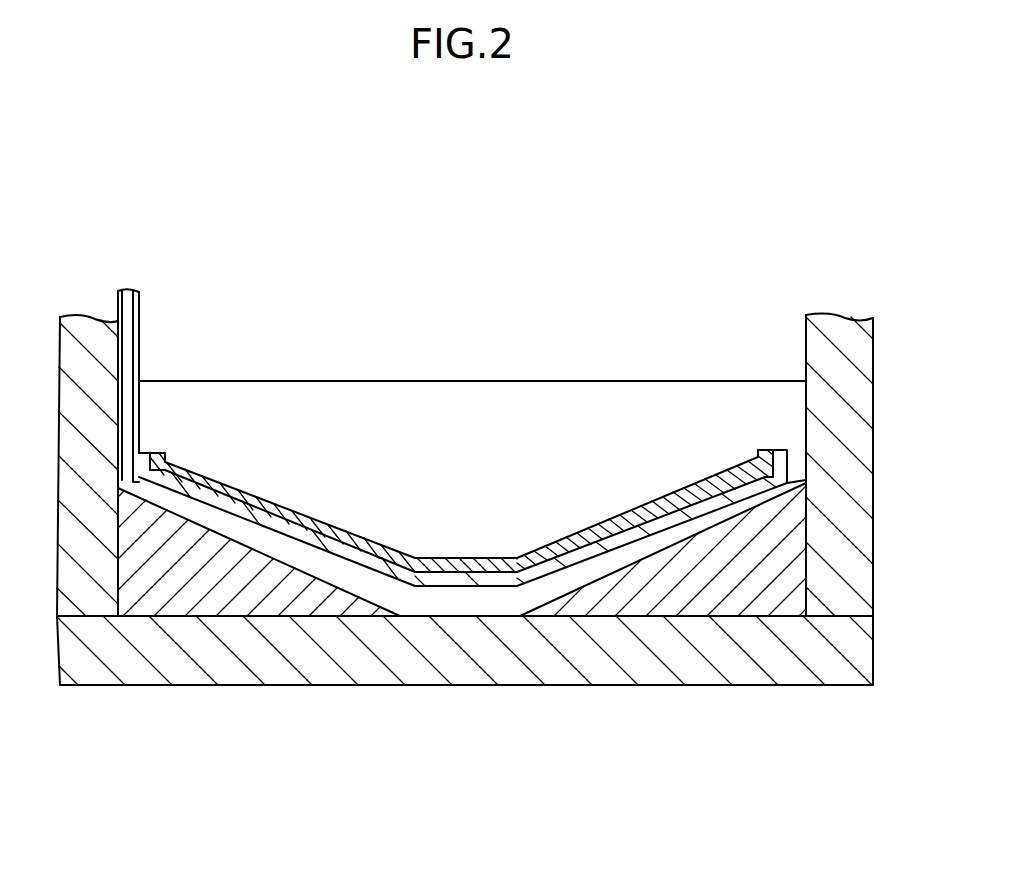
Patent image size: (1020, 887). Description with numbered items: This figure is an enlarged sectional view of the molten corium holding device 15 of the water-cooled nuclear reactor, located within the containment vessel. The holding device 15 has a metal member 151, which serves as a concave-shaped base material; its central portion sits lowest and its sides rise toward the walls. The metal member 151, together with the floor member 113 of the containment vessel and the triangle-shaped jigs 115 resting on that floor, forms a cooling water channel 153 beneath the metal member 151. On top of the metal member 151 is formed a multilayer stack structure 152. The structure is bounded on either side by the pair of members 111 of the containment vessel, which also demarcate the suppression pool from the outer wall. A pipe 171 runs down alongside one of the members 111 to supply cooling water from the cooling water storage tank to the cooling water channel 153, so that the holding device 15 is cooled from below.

The molten corium holding device 15 is at (636, 290).
The members 111 is at (862, 482).
The floor member 113 is at (466, 678).
The jigs 115 is at (268, 607).
The metal member 151 is at (485, 578).
The multilayer stack structure 152 is at (400, 558).
The cooling water channel 153 is at (462, 602).
The pipe 171 is at (120, 291).